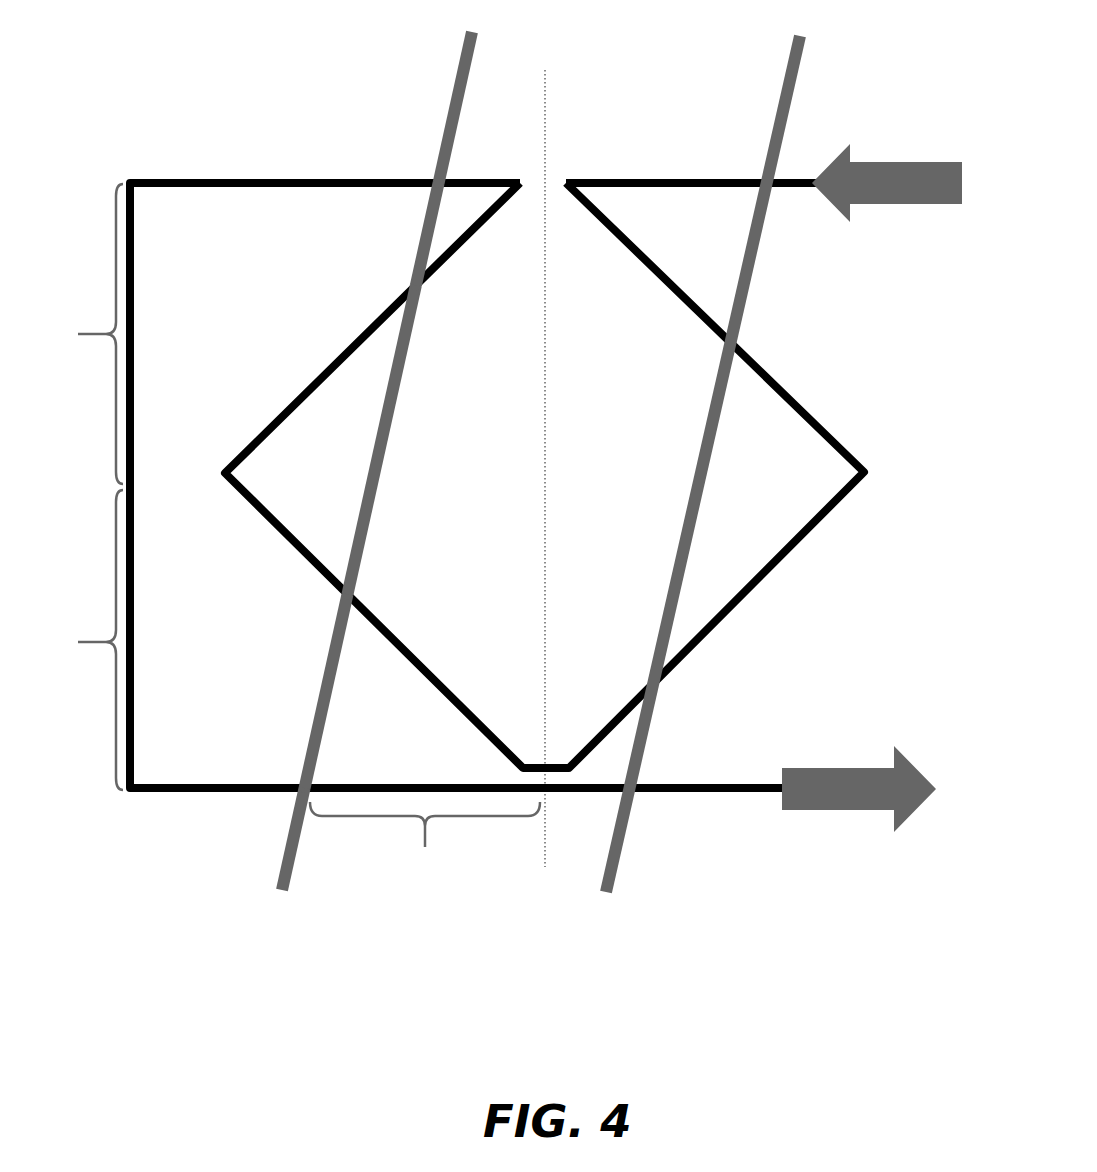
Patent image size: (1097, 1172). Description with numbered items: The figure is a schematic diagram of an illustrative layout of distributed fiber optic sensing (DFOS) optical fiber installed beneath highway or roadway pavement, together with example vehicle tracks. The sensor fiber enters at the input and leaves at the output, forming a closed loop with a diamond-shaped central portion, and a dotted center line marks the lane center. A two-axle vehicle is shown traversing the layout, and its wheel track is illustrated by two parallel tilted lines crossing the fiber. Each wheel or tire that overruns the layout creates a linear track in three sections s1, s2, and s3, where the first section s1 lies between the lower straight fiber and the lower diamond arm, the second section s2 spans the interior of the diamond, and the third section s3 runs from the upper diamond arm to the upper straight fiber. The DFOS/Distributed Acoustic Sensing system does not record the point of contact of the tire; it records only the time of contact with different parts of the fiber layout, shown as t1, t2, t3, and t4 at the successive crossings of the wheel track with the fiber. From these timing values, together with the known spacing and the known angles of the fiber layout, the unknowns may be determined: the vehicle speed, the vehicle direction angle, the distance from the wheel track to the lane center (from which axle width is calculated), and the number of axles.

The time of contact t1 is at (280, 836).
The time of contact t2 is at (374, 592).
The time of contact t3 is at (439, 292).
The time of contact t4 is at (438, 110).
The track section s1 is at (315, 691).
The track section s2 is at (376, 439).
The track section s3 is at (413, 234).
The input port arrow input is at (887, 191).
The output port arrow output is at (859, 773).